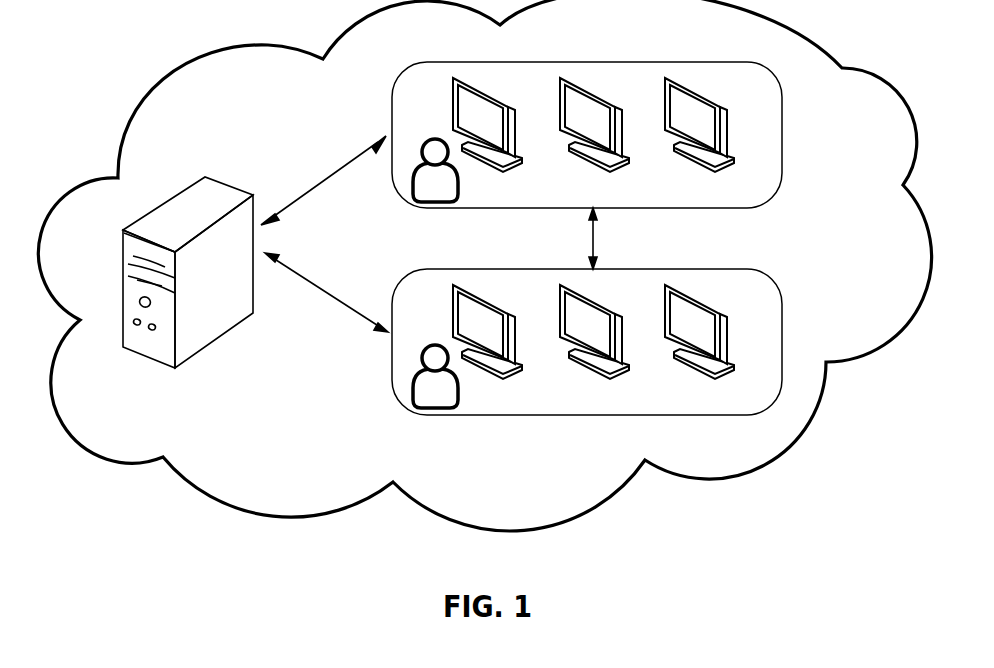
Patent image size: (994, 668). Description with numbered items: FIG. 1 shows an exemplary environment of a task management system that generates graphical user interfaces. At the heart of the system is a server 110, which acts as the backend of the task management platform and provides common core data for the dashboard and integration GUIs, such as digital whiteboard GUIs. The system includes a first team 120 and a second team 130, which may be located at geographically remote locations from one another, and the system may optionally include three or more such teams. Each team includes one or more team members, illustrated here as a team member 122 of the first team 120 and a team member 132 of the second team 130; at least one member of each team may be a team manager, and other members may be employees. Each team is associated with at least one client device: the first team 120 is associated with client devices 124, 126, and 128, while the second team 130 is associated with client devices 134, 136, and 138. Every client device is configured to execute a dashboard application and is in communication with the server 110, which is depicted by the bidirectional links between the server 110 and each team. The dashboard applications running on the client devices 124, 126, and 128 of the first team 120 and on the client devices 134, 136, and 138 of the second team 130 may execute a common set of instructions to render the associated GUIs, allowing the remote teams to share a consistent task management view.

The server 110 is at (232, 188).
The first team 120 is at (391, 123).
The team member 122 is at (438, 201).
The client device 124 is at (513, 172).
The client device 126 is at (620, 172).
The client device 128 is at (725, 172).
The second team 130 is at (392, 352).
The team member 132 is at (438, 407).
The client device 134 is at (513, 379).
The client device 136 is at (620, 379).
The client device 138 is at (725, 379).